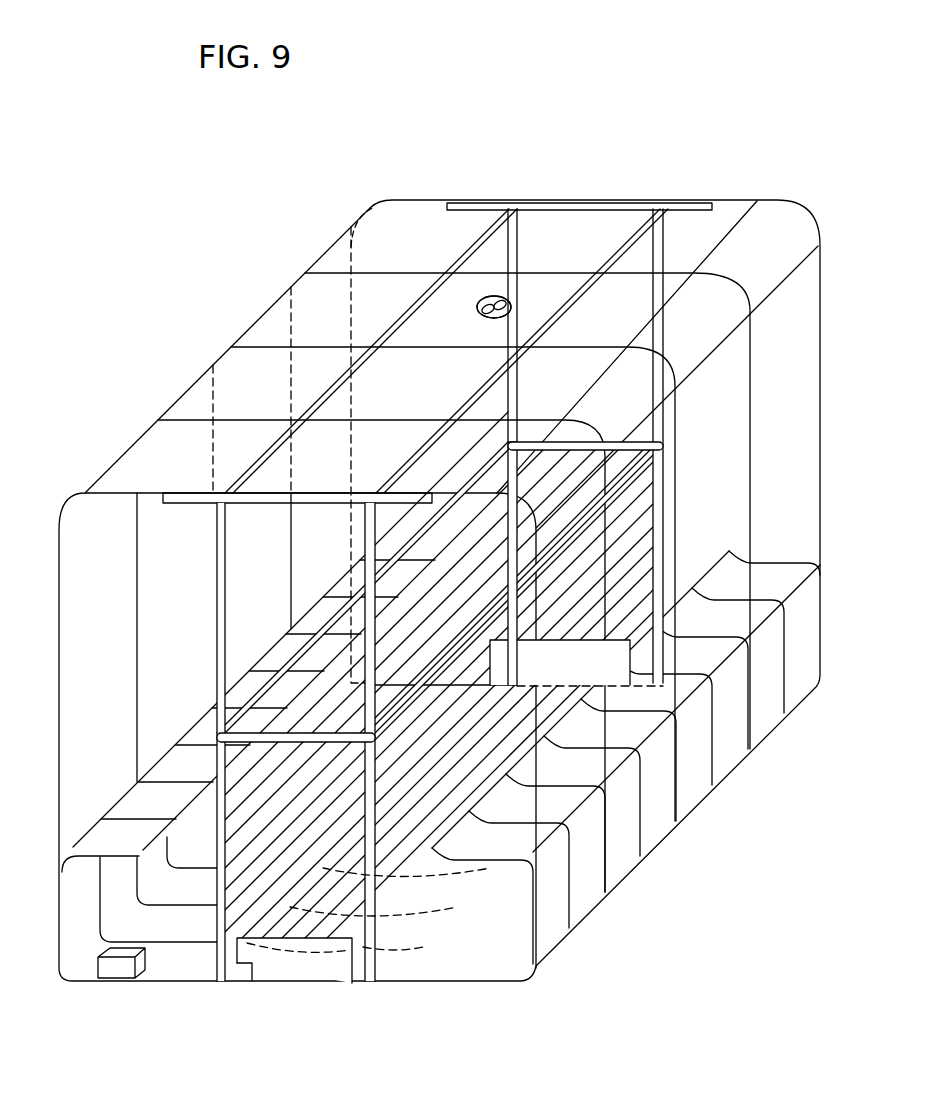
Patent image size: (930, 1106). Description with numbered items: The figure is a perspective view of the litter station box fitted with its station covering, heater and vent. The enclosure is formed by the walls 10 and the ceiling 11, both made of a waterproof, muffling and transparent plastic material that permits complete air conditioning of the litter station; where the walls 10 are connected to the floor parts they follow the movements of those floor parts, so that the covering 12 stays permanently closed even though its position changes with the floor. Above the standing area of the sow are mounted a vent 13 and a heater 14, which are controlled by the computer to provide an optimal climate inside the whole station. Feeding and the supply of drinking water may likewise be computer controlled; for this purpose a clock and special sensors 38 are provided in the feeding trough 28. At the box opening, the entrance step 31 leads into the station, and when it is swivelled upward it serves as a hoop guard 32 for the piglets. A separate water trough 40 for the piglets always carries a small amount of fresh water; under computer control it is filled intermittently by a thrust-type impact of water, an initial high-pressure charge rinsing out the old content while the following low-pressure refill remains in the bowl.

The walls 10 is at (785, 400).
The ceiling 11 is at (605, 300).
The covering 12 is at (233, 408).
The vent 13 is at (484, 298).
The heater 14 is at (494, 307).
The feeding trough 28 is at (283, 966).
The entrance step 31 is at (622, 682).
The hoop guard 32 is at (575, 641).
The sensors 38 is at (248, 968).
The water trough 40 is at (110, 967).